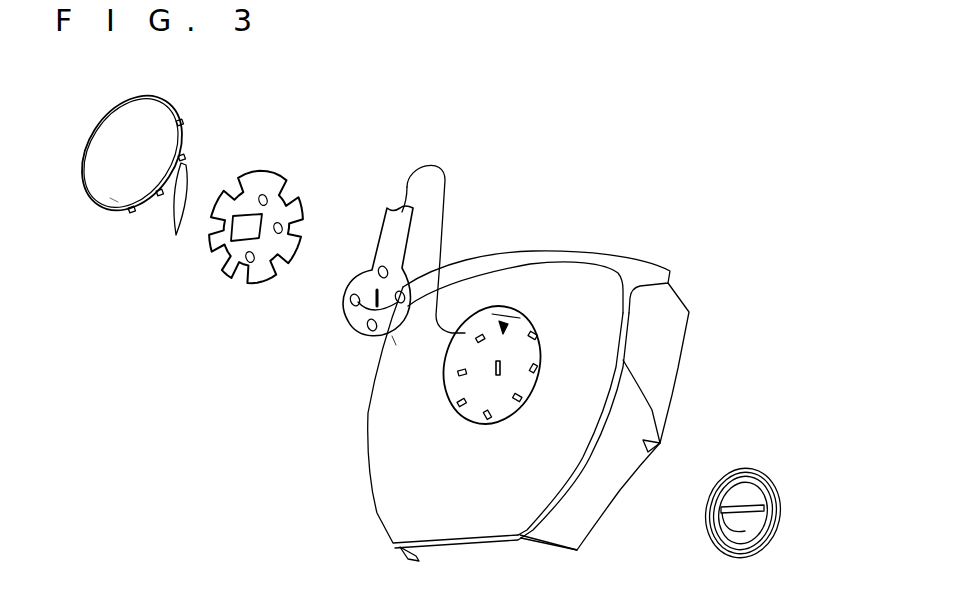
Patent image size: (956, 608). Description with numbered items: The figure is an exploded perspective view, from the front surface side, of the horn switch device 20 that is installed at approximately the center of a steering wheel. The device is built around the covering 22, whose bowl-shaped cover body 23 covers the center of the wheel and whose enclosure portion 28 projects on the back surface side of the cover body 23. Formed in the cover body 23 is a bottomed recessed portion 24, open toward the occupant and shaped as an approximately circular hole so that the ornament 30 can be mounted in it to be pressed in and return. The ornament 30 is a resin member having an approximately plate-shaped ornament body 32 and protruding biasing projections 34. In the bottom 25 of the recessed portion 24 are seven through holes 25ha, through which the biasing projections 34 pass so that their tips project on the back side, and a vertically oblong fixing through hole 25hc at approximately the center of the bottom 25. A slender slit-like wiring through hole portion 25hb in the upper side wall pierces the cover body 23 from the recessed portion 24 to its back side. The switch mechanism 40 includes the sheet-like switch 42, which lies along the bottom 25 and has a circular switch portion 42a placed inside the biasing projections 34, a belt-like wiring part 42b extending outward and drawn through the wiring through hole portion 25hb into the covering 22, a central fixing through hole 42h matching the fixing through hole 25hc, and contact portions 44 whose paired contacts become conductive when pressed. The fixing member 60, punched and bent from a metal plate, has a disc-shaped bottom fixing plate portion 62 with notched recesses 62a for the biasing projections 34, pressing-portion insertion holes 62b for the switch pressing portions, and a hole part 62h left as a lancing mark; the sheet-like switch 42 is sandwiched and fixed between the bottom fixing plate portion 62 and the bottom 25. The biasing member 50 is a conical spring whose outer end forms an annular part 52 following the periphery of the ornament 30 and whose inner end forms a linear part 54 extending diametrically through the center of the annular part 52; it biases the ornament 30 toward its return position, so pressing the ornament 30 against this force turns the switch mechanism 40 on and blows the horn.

The horn switch device 20 is at (551, 317).
The covering 22 is at (551, 371).
The cover body 23 is at (607, 315).
The recessed portion 24 is at (520, 392).
The bottom 25 is at (510, 348).
The through holes 25ha is at (458, 385).
The wiring through hole portion 25hb is at (528, 308).
The fixing through hole 25hc is at (503, 368).
The enclosure portion 28 is at (655, 372).
The ornament 30 is at (140, 158).
The ornament body 32 is at (110, 198).
The biasing projections 34 is at (176, 235).
The switch mechanism 40 is at (347, 308).
The sheet-like switch 42 is at (469, 279).
The circular switch portion 42a is at (403, 281).
The belt-like wiring part 42b is at (428, 218).
The fixing through hole 42h is at (393, 336).
The contact portions 44 is at (351, 303).
The biasing member 50 is at (773, 497).
The annular part 52 is at (780, 512).
The linear part 54 is at (737, 517).
The fixing member 60 is at (288, 207).
The bottom fixing plate portion 62 is at (288, 221).
The notched recesses 62a is at (296, 190).
The pressing-portion insertion holes 62b is at (270, 190).
The hole part 62h is at (244, 241).